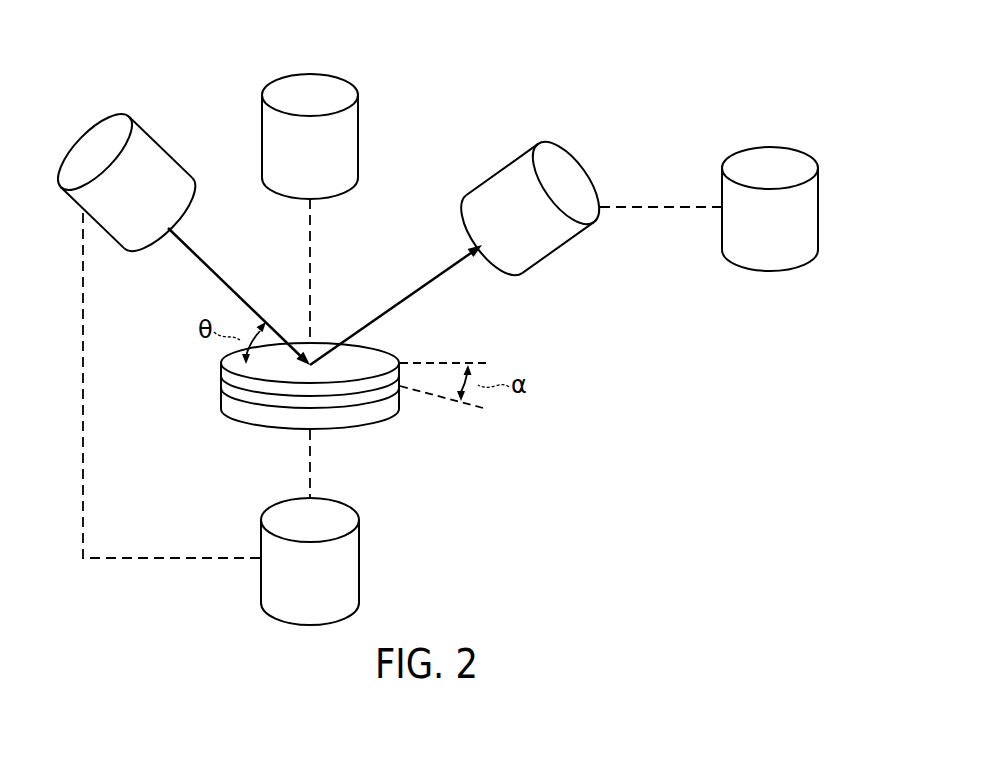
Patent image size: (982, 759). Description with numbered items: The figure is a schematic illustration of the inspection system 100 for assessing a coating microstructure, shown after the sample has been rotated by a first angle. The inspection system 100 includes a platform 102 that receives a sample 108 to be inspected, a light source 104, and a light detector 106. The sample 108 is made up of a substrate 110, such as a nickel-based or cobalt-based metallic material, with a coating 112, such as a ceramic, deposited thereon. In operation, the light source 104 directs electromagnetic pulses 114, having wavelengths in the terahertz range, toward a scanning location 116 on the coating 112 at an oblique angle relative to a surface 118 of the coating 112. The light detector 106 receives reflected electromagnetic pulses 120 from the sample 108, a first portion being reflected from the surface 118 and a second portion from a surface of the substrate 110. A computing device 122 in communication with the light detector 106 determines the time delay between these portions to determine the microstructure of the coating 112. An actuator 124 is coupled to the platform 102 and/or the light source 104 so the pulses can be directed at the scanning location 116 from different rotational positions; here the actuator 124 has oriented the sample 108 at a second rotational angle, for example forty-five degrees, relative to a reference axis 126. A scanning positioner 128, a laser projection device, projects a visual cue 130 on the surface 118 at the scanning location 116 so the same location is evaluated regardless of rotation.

The inspection system 100 is at (506, 57).
The platform 102 is at (238, 421).
The light source 104 is at (141, 128).
The light detector 106 is at (577, 160).
The sample 108 is at (418, 411).
The substrate 110 is at (220, 383).
The coating 112 is at (220, 365).
The electromagnetic pulses 114 is at (215, 272).
The scanning location 116 is at (323, 332).
The surface 118 is at (285, 367).
The reflected electromagnetic pulses 120 is at (413, 285).
The computing device 122 is at (763, 144).
The actuator 124 is at (360, 556).
The reference axis 126 is at (442, 362).
The scanning positioner 128 is at (341, 76).
The visual cue 130 is at (324, 366).